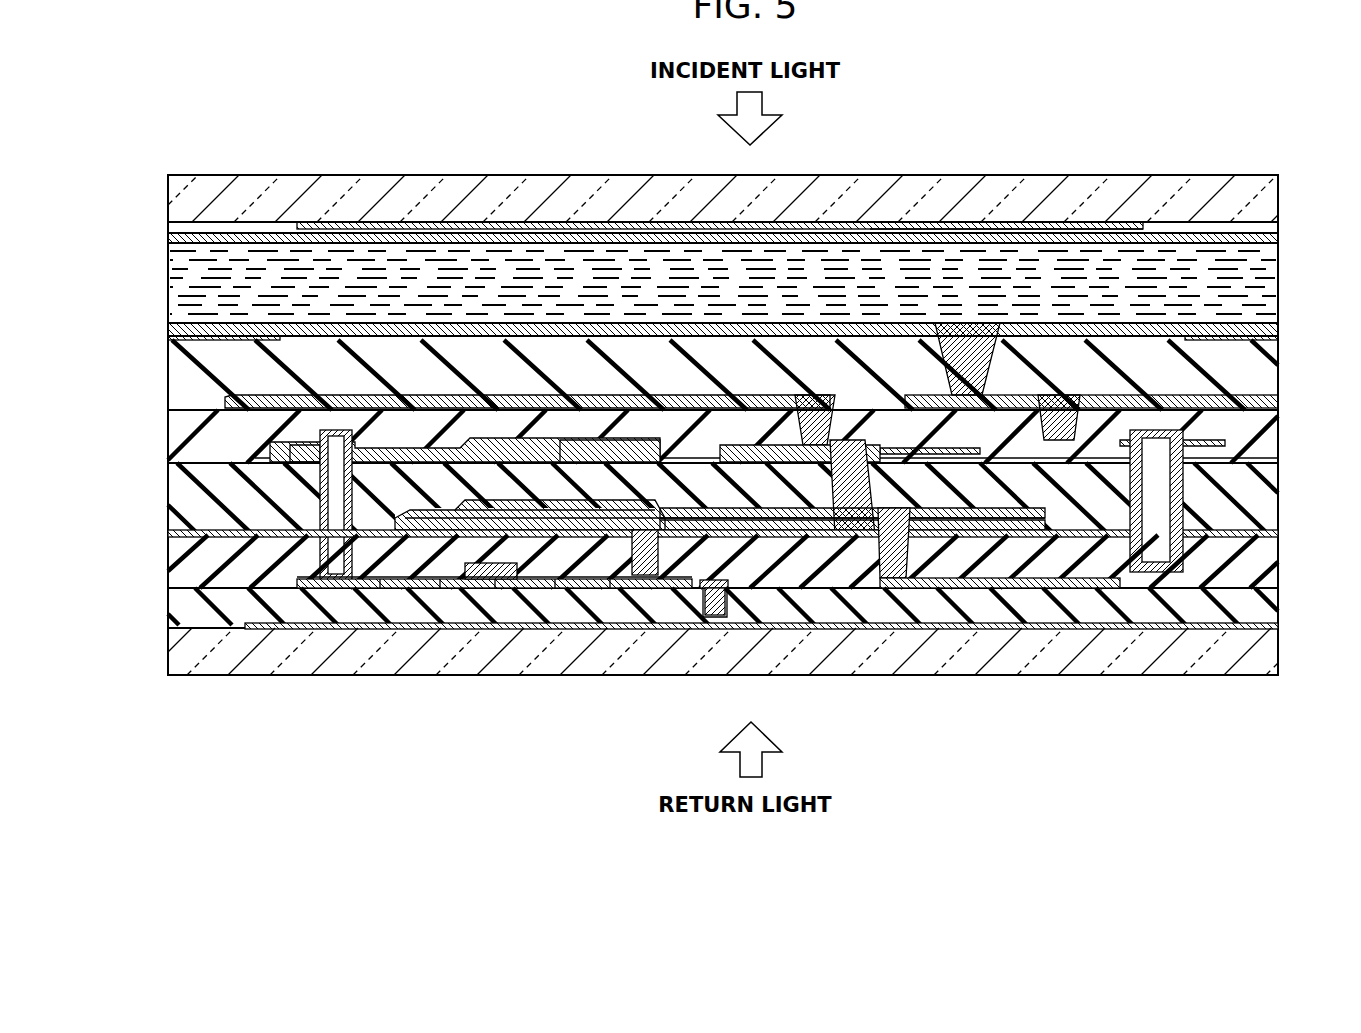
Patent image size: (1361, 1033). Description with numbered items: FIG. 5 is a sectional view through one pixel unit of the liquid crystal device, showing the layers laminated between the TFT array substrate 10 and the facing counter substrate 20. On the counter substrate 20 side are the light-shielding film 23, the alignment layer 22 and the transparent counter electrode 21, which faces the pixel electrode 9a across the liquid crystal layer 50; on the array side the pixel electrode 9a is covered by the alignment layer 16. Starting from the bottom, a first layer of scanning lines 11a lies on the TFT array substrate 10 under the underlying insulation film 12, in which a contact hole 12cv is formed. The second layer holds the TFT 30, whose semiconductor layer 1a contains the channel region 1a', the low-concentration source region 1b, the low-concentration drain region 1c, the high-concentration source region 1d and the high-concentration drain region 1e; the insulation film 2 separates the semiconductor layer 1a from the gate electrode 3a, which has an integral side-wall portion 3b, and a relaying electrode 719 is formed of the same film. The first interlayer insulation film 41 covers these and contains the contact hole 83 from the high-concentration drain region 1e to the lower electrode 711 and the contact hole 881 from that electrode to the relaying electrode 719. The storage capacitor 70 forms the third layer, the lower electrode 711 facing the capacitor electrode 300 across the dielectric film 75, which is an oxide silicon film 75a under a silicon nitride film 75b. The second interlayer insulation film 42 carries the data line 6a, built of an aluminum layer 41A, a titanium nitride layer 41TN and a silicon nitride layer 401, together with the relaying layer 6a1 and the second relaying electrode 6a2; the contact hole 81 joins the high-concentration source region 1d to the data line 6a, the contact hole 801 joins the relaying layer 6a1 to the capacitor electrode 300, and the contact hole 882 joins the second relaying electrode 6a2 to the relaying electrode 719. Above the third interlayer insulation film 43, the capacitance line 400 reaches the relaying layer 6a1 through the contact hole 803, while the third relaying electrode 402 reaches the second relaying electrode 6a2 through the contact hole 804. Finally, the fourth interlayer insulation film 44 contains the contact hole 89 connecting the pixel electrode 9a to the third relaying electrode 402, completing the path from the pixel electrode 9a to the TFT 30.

The counter substrate 20 is at (1280, 180).
The counter electrode 21 is at (1278, 226).
The alignment layer 22 is at (1278, 240).
The light-shielding film 23 is at (1000, 222).
The liquid crystal layer 50 is at (1278, 270).
The alignment layer 16 is at (1278, 328).
The pixel electrode 9a is at (168, 333).
The fourth interlayer insulation film 44 is at (1278, 382).
The third interlayer insulation film 43 is at (1278, 438).
The second interlayer insulation film 42 is at (1278, 484).
The first interlayer insulation film 41 is at (1278, 578).
The underlying insulation film 12 is at (1278, 608).
The TFT array substrate 10 is at (1278, 650).
The capacitance line 400 is at (225, 403).
The third relaying electrode 402 is at (922, 396).
The silicon nitride layer 401 is at (295, 447).
The titanium nitride layer 41TN is at (362, 446).
The aluminum layer 41A is at (590, 437).
The data line 6a is at (255, 458).
The relaying layer 6a1 is at (890, 450).
The second relaying electrode 6a2 is at (1160, 440).
The capacitor electrode 300 is at (485, 500).
The contact hole 801 is at (840, 490).
The contact hole 803 is at (815, 398).
The contact hole 804 is at (1065, 405).
The contact hole 89 is at (985, 368).
The storage capacitor 70 is at (975, 500).
The dielectric film 75 is at (1090, 465).
The oxide silicon film 75a is at (1040, 512).
The silicon nitride film 75b is at (1038, 490).
The contact hole 882 is at (1183, 468).
The contact hole 881 is at (912, 552).
The contact hole 81 is at (352, 552).
The lower electrode 711 is at (632, 540).
The contact hole 83 is at (710, 582).
The gate electrode 3a is at (490, 564).
The insulation film 2 is at (530, 577).
The semiconductor layer 1a is at (478, 646).
The high-concentration source region 1d is at (385, 588).
The low-concentration source region 1b is at (447, 588).
The channel region 1a' is at (487, 646).
The low-concentration drain region 1c is at (540, 588).
The high-concentration drain region 1e is at (588, 588).
The TFT 30 is at (627, 710).
The side-wall portion 3b is at (712, 615).
The contact hole 12cv is at (725, 617).
The relaying electrode 719 is at (1050, 588).
The scanning line 11a is at (1160, 629).